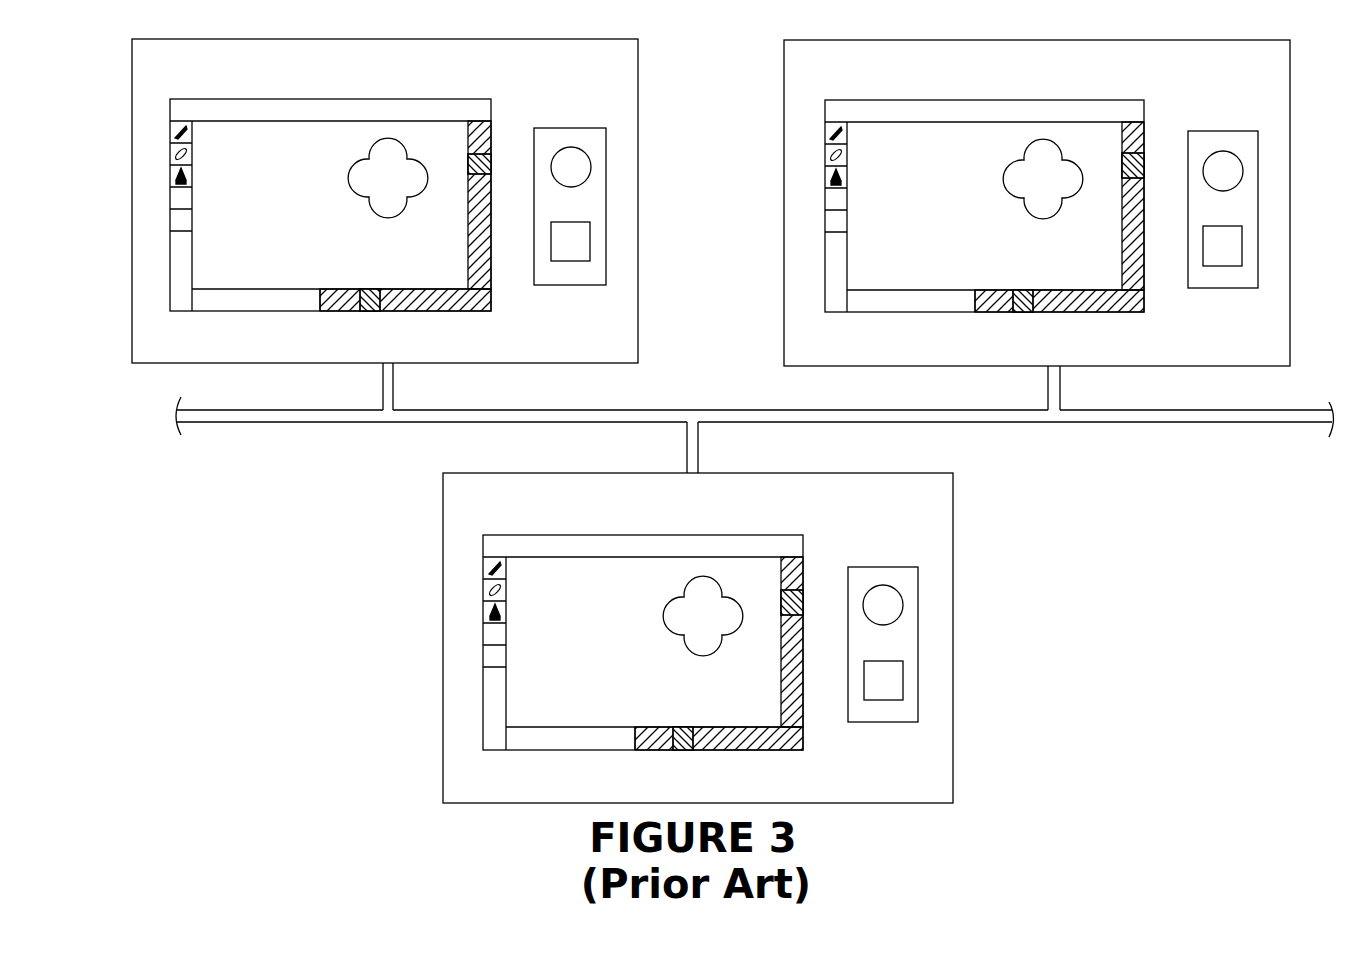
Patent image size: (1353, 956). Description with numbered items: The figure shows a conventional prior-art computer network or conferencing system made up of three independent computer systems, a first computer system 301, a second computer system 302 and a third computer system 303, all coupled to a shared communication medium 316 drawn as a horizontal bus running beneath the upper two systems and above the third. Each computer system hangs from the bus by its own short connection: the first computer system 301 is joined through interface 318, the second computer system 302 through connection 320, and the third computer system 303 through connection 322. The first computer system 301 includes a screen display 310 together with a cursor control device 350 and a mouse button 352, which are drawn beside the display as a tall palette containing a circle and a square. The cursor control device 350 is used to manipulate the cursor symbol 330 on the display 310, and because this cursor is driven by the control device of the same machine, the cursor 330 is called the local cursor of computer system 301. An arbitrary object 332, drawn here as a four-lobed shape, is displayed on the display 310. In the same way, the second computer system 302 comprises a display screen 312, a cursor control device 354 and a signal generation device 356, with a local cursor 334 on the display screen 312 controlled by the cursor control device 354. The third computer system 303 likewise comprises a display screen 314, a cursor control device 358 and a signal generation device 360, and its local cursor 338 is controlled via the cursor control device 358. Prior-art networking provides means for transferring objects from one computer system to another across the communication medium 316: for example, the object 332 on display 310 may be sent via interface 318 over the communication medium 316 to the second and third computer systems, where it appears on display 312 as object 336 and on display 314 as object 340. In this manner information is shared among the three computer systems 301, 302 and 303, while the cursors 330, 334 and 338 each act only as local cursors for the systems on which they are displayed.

The computer system 301 is at (639, 70).
The computer system 302 is at (1291, 73).
The computer system 303 is at (805, 473).
The screen display 310 is at (326, 98).
The display screen 312 is at (928, 99).
The display screen 314 is at (604, 534).
The communication medium 316 is at (1210, 423).
The interface 318 is at (394, 397).
The connection of second computer to communication medium 320 is at (1061, 397).
The connection of third computer to communication medium 322 is at (699, 462).
The cursor symbol 330 is at (303, 146).
The object 332 is at (393, 217).
The local cursor 334 is at (896, 226).
The object 336 is at (1048, 218).
The local cursor 338 is at (725, 667).
The object 340 is at (688, 650).
The cursor control device 350 is at (572, 128).
The mouse button 352 is at (573, 261).
The cursor control device 354 is at (1226, 131).
The signal generation device 356 is at (1224, 266).
The cursor control device 358 is at (890, 567).
The signal generation device 360 is at (885, 700).